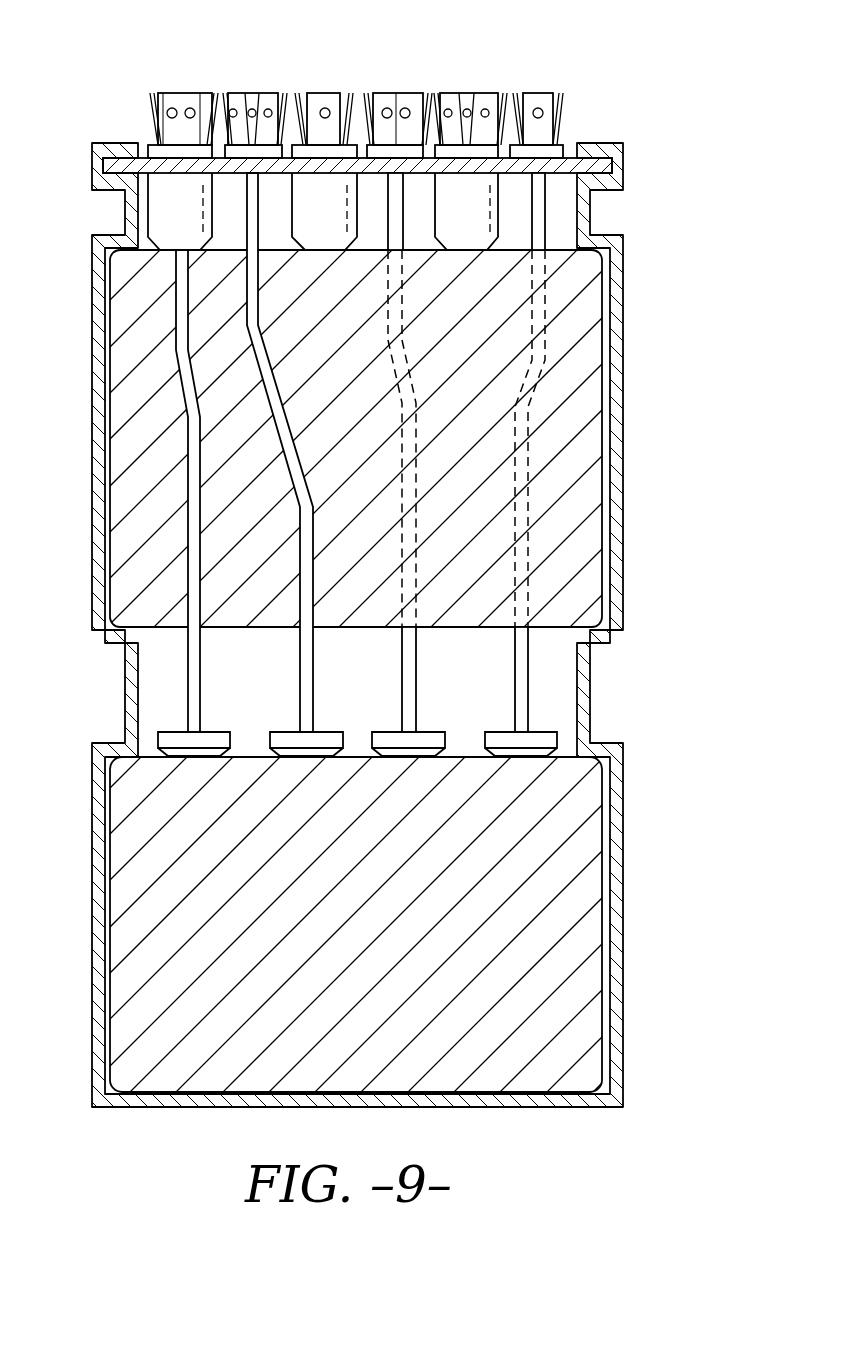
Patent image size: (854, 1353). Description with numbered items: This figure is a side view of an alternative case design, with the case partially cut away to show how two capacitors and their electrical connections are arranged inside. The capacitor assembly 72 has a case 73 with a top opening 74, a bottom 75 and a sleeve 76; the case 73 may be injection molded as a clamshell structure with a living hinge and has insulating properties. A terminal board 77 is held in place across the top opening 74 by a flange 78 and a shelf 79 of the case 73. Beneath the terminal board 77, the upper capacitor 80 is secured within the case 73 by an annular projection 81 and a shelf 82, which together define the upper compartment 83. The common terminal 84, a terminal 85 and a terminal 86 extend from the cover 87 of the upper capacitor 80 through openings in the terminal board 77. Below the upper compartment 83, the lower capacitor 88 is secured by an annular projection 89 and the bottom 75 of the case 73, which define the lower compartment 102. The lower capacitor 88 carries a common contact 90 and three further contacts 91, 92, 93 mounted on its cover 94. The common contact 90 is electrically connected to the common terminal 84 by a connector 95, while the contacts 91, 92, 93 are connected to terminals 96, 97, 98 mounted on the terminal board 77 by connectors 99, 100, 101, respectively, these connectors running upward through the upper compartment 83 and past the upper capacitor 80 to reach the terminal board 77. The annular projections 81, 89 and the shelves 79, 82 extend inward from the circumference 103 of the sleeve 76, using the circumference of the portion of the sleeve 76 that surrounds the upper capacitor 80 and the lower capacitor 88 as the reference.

The capacitor assembly 72 is at (652, 150).
The case 73 is at (640, 326).
The top opening 74 is at (141, 134).
The bottom 75 is at (157, 1098).
The sleeve 76 is at (97, 320).
The terminal board 77 is at (110, 165).
The flange 78 is at (122, 142).
The shelf 79 is at (115, 185).
The upper capacitor 80 is at (135, 432).
The annular projection 81 is at (605, 232).
The shelf 82 is at (603, 645).
The upper compartment 83 is at (605, 473).
The common terminal 84 is at (178, 190).
The terminal 85 is at (322, 188).
The terminal 86 is at (465, 190).
The cover 87 is at (553, 252).
The lower capacitor 88 is at (143, 968).
The annular projection 89 is at (110, 740).
The common contact 90 is at (170, 727).
The contact 91 is at (282, 730).
The contact 92 is at (427, 730).
The contact 93 is at (547, 730).
The cover 94 is at (253, 758).
The connector 95 is at (185, 520).
The terminal 96 is at (250, 90).
The terminal 97 is at (405, 95).
The terminal 98 is at (543, 92).
The connector 99 is at (220, 368).
The connector 100 is at (400, 685).
The connector 101 is at (510, 678).
The lower compartment 102 is at (608, 890).
The circumference 103 is at (620, 355).